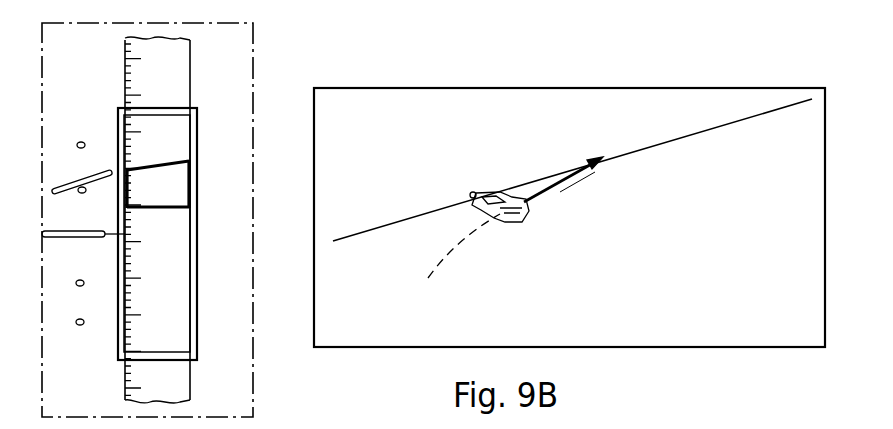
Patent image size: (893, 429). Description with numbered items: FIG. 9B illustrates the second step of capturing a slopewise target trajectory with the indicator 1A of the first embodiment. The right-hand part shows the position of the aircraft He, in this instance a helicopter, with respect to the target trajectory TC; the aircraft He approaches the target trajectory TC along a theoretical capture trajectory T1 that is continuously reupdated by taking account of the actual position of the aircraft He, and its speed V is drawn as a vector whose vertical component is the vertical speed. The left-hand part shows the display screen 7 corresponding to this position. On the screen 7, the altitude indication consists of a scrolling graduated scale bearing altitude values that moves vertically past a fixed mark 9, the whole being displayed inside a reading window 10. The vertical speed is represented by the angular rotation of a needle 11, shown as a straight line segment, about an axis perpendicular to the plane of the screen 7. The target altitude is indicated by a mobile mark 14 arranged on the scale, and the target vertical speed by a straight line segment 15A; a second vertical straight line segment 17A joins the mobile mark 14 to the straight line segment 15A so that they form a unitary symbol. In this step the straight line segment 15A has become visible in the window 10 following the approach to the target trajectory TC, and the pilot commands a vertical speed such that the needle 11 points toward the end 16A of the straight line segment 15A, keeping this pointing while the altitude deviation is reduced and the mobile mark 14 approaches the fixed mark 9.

The indicator 1A is at (262, 104).
The display screen 7 is at (252, 370).
The fixed mark 9 is at (55, 240).
The reading window 10 is at (197, 330).
The needle 11 is at (57, 185).
The mobile mark 14 is at (170, 210).
The straight line segment 15A is at (170, 163).
The end of the straight line segment 16A is at (124, 165).
The second vertical straight line segment 17A is at (190, 183).
The target trajectory TC is at (405, 222).
The theoretical capture trajectory T1 is at (452, 255).
The aircraft He is at (507, 221).
The speed V is at (548, 188).